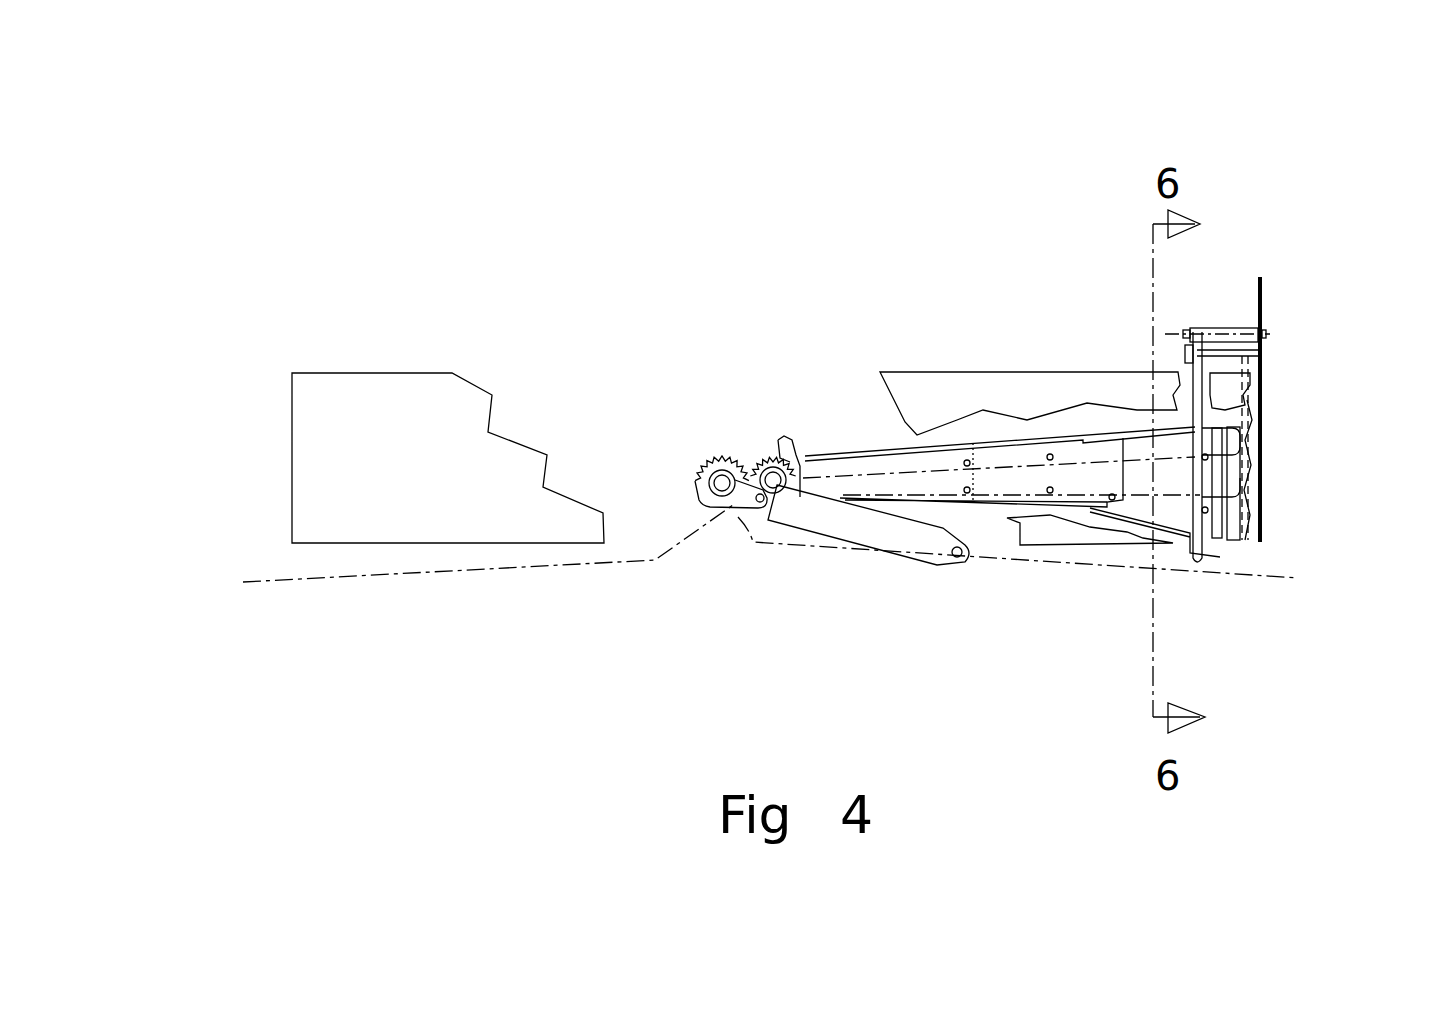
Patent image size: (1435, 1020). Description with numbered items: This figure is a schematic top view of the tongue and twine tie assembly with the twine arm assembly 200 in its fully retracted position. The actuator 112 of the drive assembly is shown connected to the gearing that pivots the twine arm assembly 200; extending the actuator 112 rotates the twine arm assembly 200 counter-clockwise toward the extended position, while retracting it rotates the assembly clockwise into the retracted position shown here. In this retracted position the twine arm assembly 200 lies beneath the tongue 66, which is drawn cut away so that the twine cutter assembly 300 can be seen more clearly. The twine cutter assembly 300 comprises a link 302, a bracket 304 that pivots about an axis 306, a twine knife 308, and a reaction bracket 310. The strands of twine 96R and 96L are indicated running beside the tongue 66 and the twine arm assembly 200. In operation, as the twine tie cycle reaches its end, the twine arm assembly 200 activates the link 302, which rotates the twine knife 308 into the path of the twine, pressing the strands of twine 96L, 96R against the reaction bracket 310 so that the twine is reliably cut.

The tongue 66 is at (345, 380).
The strand of twine 96R is at (373, 578).
The strand of twine 96L is at (1160, 573).
The actuator 112 is at (862, 548).
The twine arm assembly 200 is at (1087, 312).
The twine cutter assembly 300 is at (1166, 340).
The link 302 is at (1202, 558).
The bracket 304 is at (1228, 332).
The axis 306 is at (1266, 334).
The twine knife 308 is at (1225, 348).
The reaction bracket 310 is at (1213, 360).